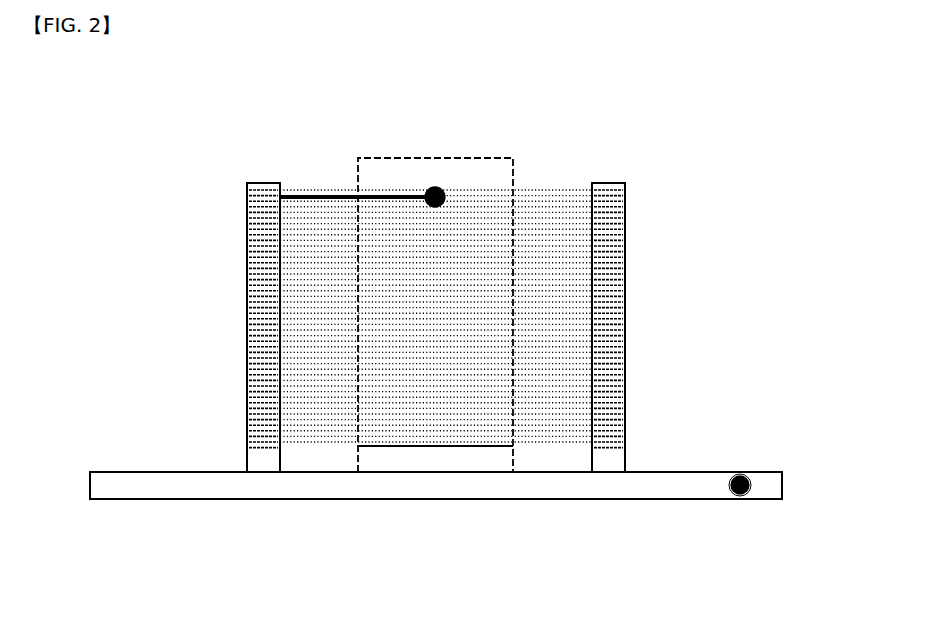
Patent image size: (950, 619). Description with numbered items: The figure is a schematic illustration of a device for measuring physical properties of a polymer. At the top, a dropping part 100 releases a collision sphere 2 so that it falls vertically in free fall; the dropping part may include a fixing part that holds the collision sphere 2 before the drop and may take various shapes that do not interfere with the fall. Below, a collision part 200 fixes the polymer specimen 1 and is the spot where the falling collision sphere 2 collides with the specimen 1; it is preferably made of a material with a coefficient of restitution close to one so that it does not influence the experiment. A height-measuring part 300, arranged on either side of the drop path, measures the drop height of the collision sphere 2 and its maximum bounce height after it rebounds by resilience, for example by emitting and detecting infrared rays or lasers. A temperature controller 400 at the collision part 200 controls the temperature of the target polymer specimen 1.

The substrate 1 is at (450, 462).
The semiconductor chip / thin film 2 is at (445, 196).
The dropping part 100 is at (470, 159).
The collision part 200 is at (450, 488).
The height-measuring part 300 is at (247, 318).
The temperature controller 400 is at (748, 481).